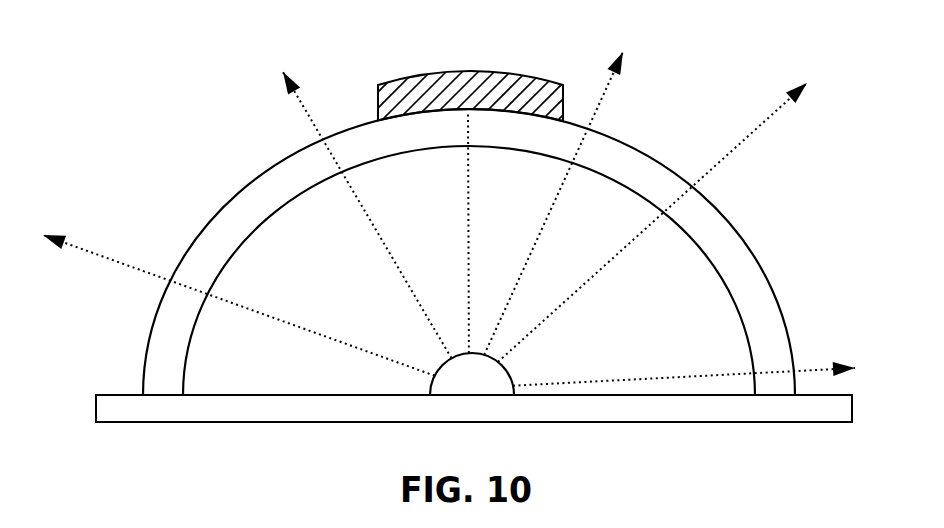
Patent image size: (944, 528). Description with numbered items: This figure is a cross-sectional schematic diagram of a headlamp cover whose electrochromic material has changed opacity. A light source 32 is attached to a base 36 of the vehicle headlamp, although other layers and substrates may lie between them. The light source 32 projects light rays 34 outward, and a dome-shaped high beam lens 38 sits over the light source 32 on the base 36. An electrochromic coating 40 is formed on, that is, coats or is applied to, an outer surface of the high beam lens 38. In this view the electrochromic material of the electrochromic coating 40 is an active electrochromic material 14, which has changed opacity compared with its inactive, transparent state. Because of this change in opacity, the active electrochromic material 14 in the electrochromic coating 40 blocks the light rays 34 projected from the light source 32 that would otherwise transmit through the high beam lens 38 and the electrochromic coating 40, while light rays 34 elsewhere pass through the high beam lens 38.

The active electrochromic material 14 is at (417, 95).
The light source 32 is at (497, 386).
The light rays 34 is at (465, 210).
The base 36 is at (235, 422).
The high beam lens 38 is at (729, 222).
The electrochromic coating 40 is at (537, 74).